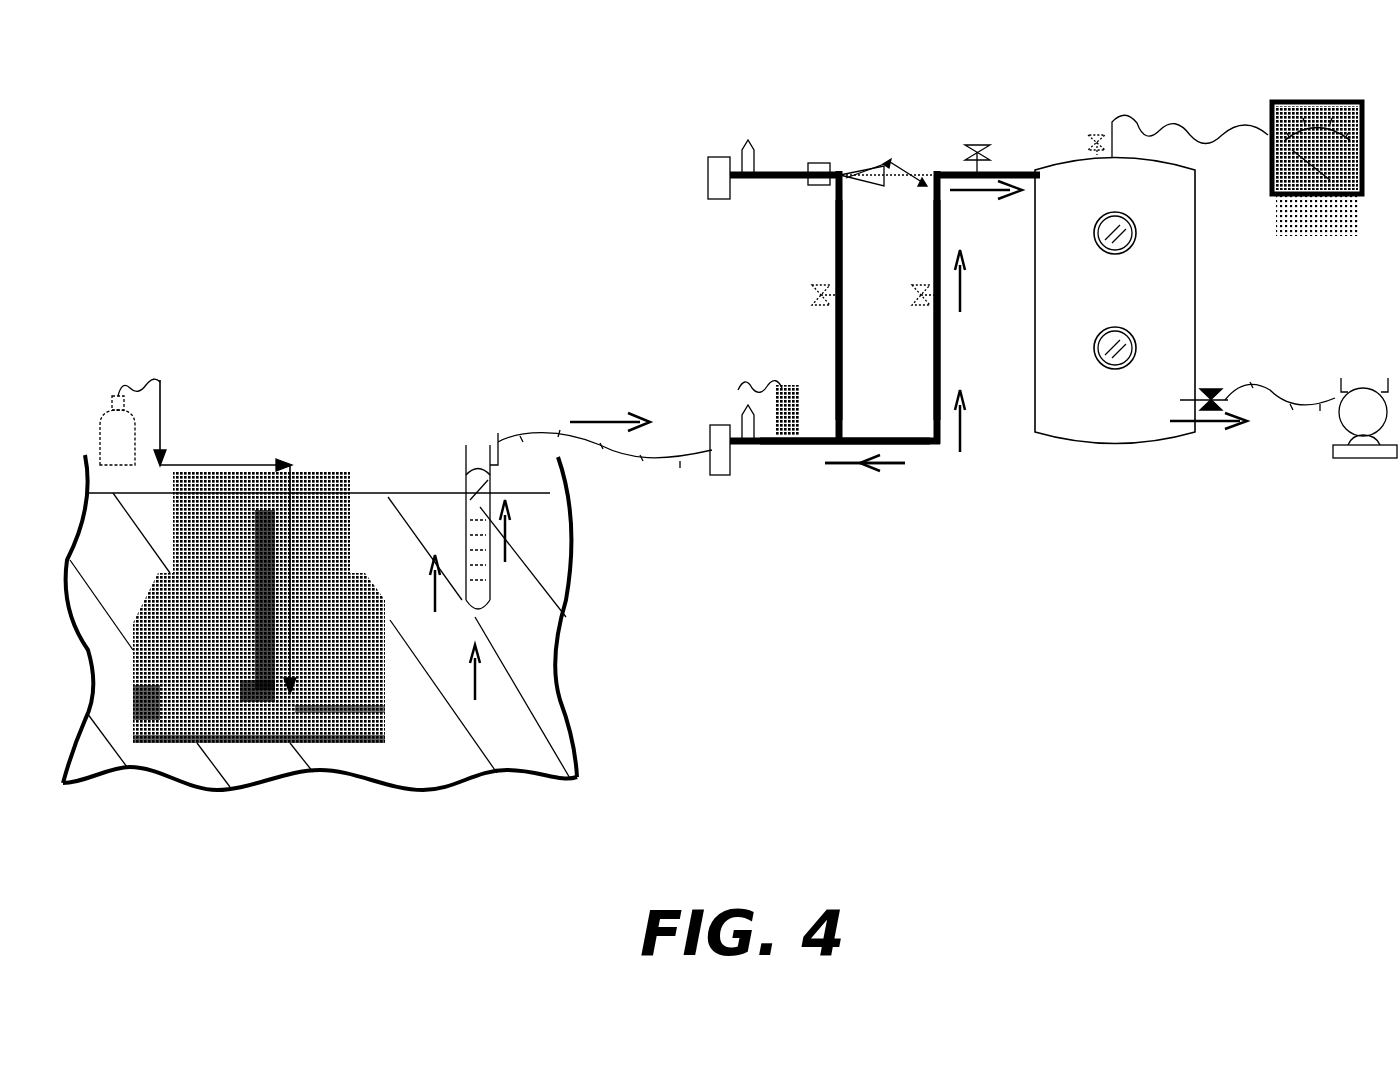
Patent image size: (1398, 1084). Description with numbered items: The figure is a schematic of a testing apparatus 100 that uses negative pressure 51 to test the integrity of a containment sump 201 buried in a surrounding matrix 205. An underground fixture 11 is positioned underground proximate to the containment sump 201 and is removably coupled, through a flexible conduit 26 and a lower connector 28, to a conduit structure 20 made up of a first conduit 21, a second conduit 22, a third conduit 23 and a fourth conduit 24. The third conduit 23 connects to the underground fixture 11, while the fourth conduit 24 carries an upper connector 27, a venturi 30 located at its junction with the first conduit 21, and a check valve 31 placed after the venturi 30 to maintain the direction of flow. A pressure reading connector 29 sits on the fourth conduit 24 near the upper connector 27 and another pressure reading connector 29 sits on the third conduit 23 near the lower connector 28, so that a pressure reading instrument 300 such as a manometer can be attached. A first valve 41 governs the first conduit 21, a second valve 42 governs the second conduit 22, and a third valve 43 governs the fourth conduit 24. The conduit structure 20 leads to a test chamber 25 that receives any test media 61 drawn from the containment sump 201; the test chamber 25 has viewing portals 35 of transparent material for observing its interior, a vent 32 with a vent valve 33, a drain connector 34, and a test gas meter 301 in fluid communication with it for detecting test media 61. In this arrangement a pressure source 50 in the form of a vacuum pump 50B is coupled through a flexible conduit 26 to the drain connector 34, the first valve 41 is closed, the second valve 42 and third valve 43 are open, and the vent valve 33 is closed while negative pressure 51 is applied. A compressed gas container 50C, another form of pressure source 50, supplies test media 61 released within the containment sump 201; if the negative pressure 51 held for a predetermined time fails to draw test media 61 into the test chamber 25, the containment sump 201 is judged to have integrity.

The testing apparatus 100 is at (360, 108).
The underground fixture 11 is at (490, 608).
The conduit structure 20 is at (790, 468).
The first conduit 21 is at (842, 385).
The second conduit 22 is at (940, 348).
The third conduit 23 is at (905, 448).
The fourth conduit 24 is at (818, 165).
The test chamber 25 is at (1155, 302).
The flexible conduit 26 is at (540, 437).
The upper connector 27 is at (718, 175).
The lower connector 28 is at (720, 460).
The pressure reading connector 29 is at (742, 168).
The venturi 30 is at (862, 180).
The check valve 31 is at (905, 163).
The vent 32 is at (1145, 128).
The vent valve 33 is at (1090, 138).
The drain connector 34 is at (1205, 395).
The viewing portal 35 is at (1120, 362).
The first valve 41 is at (812, 293).
The second valve 42 is at (912, 295).
The third valve 43 is at (975, 155).
The pressure source 50 is at (88, 378).
The vacuum pump 50B is at (1365, 398).
The compressed gas container 50C is at (116, 400).
The negative pressure 51 is at (873, 466).
The test media 61 is at (825, 465).
The containment sump 201 is at (180, 635).
The matrix 205 is at (410, 510).
The pressure reading instrument 300 is at (790, 395).
The test gas meter 301 is at (1340, 120).